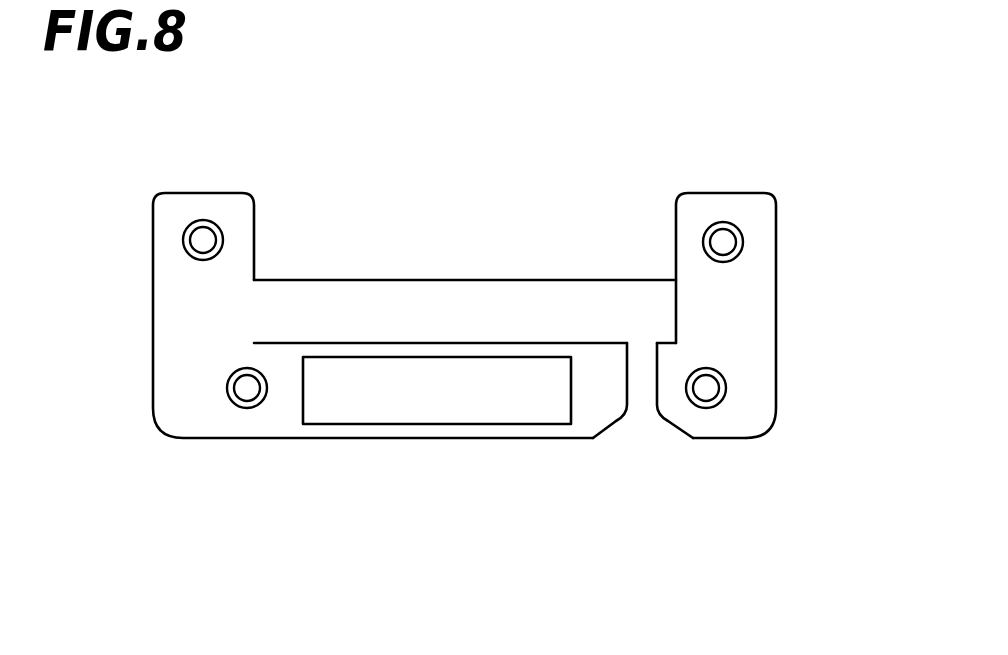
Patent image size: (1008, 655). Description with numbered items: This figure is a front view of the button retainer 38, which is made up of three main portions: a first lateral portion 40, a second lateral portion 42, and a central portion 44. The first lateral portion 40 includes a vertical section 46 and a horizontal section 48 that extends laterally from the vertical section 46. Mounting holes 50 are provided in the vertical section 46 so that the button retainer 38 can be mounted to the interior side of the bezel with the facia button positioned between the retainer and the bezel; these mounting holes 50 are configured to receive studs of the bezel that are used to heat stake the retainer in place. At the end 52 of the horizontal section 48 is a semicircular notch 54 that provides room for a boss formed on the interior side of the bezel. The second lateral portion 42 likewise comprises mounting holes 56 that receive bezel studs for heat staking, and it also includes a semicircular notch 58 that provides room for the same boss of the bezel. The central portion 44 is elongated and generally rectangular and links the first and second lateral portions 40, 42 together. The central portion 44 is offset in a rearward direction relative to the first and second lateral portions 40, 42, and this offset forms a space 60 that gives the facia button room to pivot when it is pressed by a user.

The button retainer 38 is at (825, 150).
The first lateral portion 40 is at (183, 348).
The second lateral portion 42 is at (747, 300).
The central portion 44 is at (510, 292).
The vertical section 46 is at (199, 299).
The horizontal section 48 is at (437, 390).
The mounting holes 50 is at (203, 220).
The end 52 is at (645, 478).
The semicircular notch 54 is at (610, 420).
The mounting holes 56 is at (723, 222).
The semicircular notch 58 is at (682, 437).
The space 60 is at (341, 300).